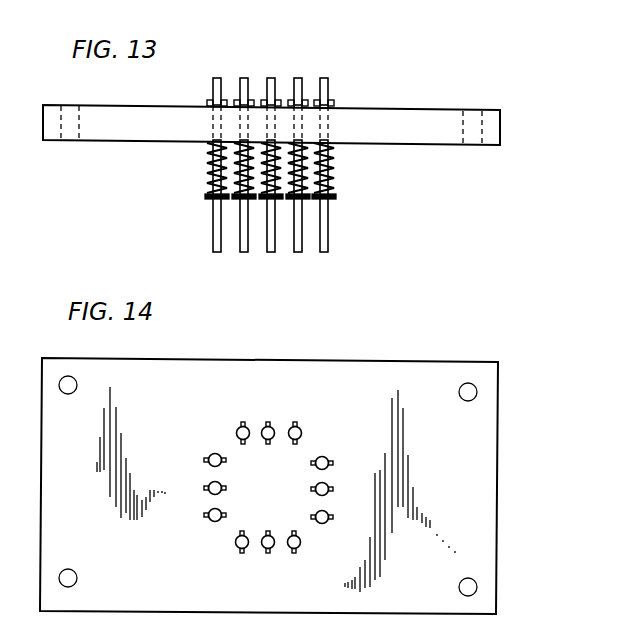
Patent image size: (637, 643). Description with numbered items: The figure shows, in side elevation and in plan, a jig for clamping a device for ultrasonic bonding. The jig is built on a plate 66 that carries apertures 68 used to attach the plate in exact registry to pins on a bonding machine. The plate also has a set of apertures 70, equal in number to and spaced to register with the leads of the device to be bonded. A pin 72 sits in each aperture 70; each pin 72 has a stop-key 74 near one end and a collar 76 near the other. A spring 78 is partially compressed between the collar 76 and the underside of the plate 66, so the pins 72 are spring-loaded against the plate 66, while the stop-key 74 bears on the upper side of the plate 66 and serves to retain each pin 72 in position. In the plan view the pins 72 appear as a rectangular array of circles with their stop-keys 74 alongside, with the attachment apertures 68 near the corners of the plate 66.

In FIG. 13, the plate 66 is at (428, 109).
In FIG. 14, the plate 66 is at (470, 448).
In FIG. 13, the apertures 68 is at (78, 141).
In FIG. 14, the apertures 68 is at (463, 386).
In FIG. 13, the apertures 70 is at (330, 128).
In FIG. 13, the pin 72 is at (330, 233).
In FIG. 14, the pin 72 is at (325, 460).
In FIG. 13, the stop-key 74 is at (334, 104).
In FIG. 14, the stop-key 74 is at (294, 424).
In FIG. 13, the collar 76 is at (334, 197).
In FIG. 13, the spring 78 is at (332, 156).